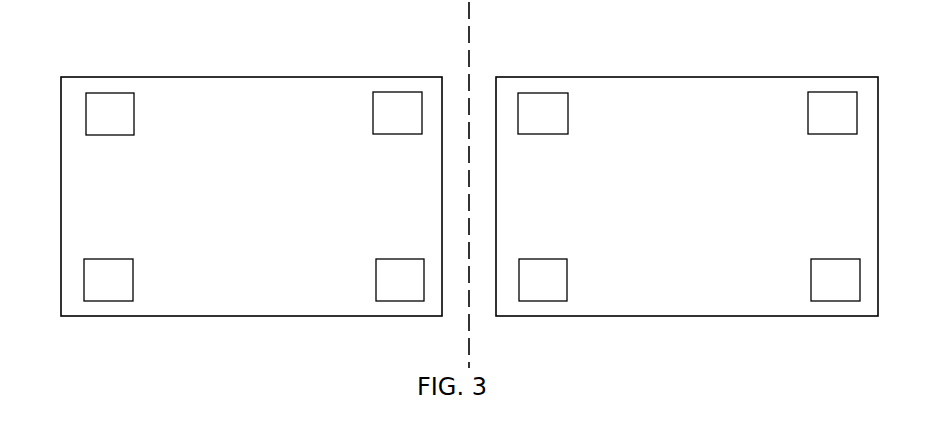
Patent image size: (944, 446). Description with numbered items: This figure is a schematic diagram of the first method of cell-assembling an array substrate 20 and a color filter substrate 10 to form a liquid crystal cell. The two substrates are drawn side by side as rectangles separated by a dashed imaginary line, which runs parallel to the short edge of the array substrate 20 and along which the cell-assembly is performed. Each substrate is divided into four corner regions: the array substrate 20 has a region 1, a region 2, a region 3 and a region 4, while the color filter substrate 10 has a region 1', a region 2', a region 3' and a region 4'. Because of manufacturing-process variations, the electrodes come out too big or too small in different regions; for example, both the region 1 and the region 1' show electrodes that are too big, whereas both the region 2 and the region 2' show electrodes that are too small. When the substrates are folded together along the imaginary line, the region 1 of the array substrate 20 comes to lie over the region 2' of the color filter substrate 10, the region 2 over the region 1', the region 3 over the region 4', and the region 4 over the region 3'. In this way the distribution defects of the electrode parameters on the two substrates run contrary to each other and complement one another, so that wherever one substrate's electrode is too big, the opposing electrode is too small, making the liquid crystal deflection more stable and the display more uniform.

The array substrate 20 is at (240, 77).
The color filter substrate 10 is at (696, 77).
The region 1 of the array substrate 1 is at (110, 114).
The region 2 of the array substrate 2 is at (397, 113).
The region 3 of the array substrate 3 is at (108, 280).
The region 4 of the array substrate 4 is at (400, 280).
The region 1' of the color filter substrate 1' is at (543, 113).
The region 2' of the color filter substrate 2' is at (832, 113).
The region 3' of the color filter substrate 3' is at (543, 280).
The region 4' of the color filter substrate 4' is at (835, 280).